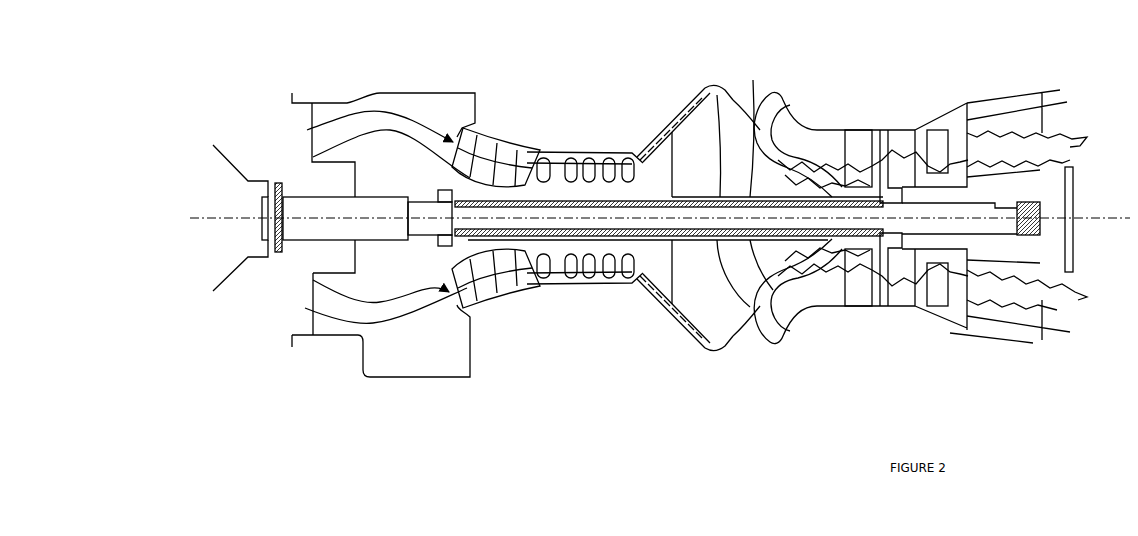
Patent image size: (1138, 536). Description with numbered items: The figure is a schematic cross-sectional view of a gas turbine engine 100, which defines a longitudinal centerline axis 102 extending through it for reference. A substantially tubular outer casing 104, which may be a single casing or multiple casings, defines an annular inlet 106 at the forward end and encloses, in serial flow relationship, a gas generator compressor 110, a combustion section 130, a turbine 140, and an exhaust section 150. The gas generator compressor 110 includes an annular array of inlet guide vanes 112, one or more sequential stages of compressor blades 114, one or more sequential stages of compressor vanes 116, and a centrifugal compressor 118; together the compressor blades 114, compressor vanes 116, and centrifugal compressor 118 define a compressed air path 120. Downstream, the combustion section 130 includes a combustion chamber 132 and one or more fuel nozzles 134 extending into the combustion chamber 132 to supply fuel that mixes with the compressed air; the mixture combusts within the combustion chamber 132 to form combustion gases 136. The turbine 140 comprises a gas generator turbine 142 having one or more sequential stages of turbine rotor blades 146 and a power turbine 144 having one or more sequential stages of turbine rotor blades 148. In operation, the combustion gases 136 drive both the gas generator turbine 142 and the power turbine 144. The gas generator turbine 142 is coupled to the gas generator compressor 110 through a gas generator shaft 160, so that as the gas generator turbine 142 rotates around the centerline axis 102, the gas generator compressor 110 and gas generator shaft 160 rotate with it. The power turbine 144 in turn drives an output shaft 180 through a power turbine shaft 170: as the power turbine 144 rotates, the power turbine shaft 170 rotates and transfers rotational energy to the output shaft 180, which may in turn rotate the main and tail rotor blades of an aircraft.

The gas turbine engine 100 is at (307, 374).
The centerline axis 102 is at (228, 218).
The outer casing 104 is at (540, 140).
The annular inlet 106 is at (305, 115).
The gas generator compressor 110 is at (546, 297).
The inlet guide vanes 112 is at (512, 250).
The compressor blades 114 is at (522, 155).
The compressor vanes 116 is at (573, 280).
The centrifugal compressor 118 is at (662, 290).
The compressed air path 120 is at (488, 186).
The combustion section 130 is at (745, 312).
The combustion chamber 132 is at (798, 131).
The fuel nozzles 134 is at (778, 96).
The combustion gases 136 is at (812, 276).
The turbine 140 is at (928, 319).
The gas generator turbine 142 is at (884, 308).
The power turbine 144 is at (972, 131).
The turbine rotor blades 146 is at (848, 185).
The turbine rotor blades 148 is at (919, 128).
The exhaust section 150 is at (1037, 352).
The gas generator shaft 160 is at (695, 186).
The power turbine shaft 170 is at (972, 236).
The output shaft 180 is at (283, 197).